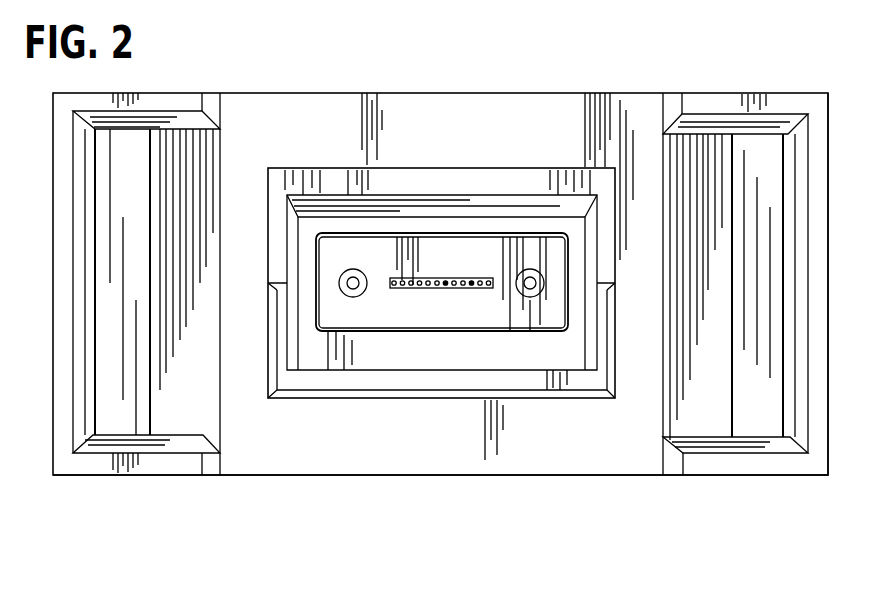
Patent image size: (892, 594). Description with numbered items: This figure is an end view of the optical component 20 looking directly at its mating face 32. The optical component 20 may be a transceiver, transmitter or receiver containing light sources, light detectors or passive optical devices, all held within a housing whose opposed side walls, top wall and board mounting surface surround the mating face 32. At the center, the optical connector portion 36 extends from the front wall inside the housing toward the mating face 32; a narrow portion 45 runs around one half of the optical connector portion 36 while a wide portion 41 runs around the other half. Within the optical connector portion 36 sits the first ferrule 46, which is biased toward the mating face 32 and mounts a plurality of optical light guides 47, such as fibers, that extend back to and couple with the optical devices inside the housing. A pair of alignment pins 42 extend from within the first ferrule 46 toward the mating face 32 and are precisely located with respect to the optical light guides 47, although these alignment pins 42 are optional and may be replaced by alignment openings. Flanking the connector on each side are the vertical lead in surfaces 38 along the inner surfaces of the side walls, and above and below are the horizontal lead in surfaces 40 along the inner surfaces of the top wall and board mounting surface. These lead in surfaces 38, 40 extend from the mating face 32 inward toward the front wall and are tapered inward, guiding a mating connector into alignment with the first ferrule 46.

The optical component 20 is at (652, 90).
The mating face 32 is at (818, 477).
The optical connector portion 36 is at (464, 162).
The vertical lead in surfaces 38 is at (97, 302).
The horizontal lead in surfaces 40 is at (178, 120).
The wide portion 41 is at (603, 350).
The alignment pins 42 is at (353, 297).
The narrow portion 45 is at (527, 205).
The first ferrule 46 is at (385, 313).
The optical light guides 47 is at (467, 289).